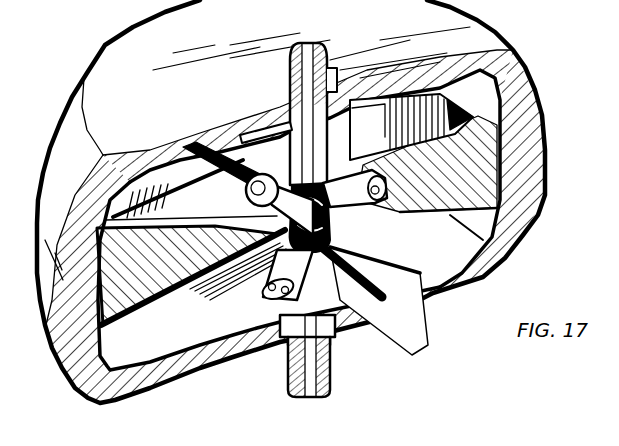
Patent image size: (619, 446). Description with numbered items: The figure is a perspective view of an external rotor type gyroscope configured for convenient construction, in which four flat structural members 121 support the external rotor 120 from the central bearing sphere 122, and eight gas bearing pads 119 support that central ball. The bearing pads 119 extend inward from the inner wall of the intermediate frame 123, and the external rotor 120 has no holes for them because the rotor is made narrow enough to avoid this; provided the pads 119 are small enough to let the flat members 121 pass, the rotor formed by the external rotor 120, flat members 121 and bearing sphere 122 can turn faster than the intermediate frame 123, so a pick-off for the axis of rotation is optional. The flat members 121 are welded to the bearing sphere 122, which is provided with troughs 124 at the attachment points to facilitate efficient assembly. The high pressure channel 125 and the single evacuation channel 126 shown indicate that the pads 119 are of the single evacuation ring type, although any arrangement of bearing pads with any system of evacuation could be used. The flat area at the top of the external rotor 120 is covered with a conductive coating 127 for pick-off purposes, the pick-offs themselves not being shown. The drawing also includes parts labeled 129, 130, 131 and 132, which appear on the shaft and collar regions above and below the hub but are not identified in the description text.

The bearing pads 119 is at (190, 147).
The external rotor 120 is at (380, 136).
The flat structural members 121 is at (193, 223).
The bearing sphere 122 is at (298, 240).
The intermediate frame 123 is at (546, 163).
The troughs 124 is at (262, 240).
The high pressure channel 125 is at (241, 133).
The single evacuation channel 126 is at (213, 148).
The conductive coating 127 is at (502, 103).
The upper shaft 129 is at (306, 42).
The upper collar 130 is at (372, 67).
The lower shaft 131 is at (310, 398).
The lower collar 132 is at (250, 346).